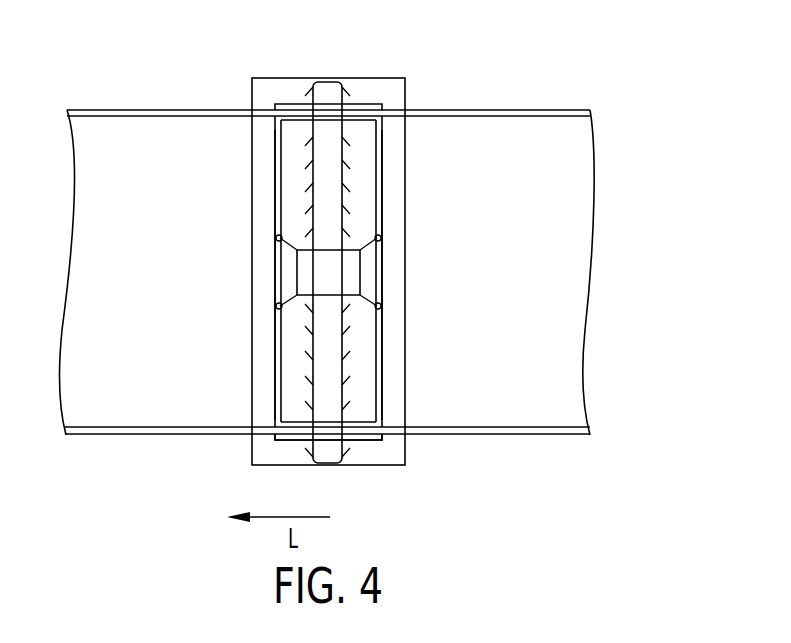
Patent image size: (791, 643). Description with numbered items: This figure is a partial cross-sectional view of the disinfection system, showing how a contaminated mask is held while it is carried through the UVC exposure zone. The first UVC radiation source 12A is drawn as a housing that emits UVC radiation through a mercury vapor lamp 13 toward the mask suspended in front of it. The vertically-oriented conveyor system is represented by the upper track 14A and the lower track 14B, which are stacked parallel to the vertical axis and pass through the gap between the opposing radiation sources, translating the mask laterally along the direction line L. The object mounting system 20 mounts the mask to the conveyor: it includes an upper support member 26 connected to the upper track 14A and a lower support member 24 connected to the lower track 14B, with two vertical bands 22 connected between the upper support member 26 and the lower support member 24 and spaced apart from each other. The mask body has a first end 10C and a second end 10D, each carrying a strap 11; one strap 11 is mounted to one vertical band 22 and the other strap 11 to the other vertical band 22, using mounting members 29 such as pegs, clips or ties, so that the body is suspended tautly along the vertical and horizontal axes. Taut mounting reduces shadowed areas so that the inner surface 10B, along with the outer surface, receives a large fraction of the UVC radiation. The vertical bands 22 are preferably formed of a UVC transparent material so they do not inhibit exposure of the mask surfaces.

The first UVC radiation source 12A is at (258, 66).
The mercury vapor lamp 13 is at (327, 90).
The upper support member 26 is at (364, 103).
The upper track 14A is at (153, 109).
The lower track 14B is at (167, 435).
The vertical band 22 is at (278, 203).
The mounting member 29 is at (276, 236).
The strap 11 is at (278, 272).
The first end 10C is at (307, 280).
The second end 10D is at (355, 277).
The inner surface 10B is at (352, 290).
The object mounting system 20 is at (400, 389).
The lower support member 24 is at (362, 440).